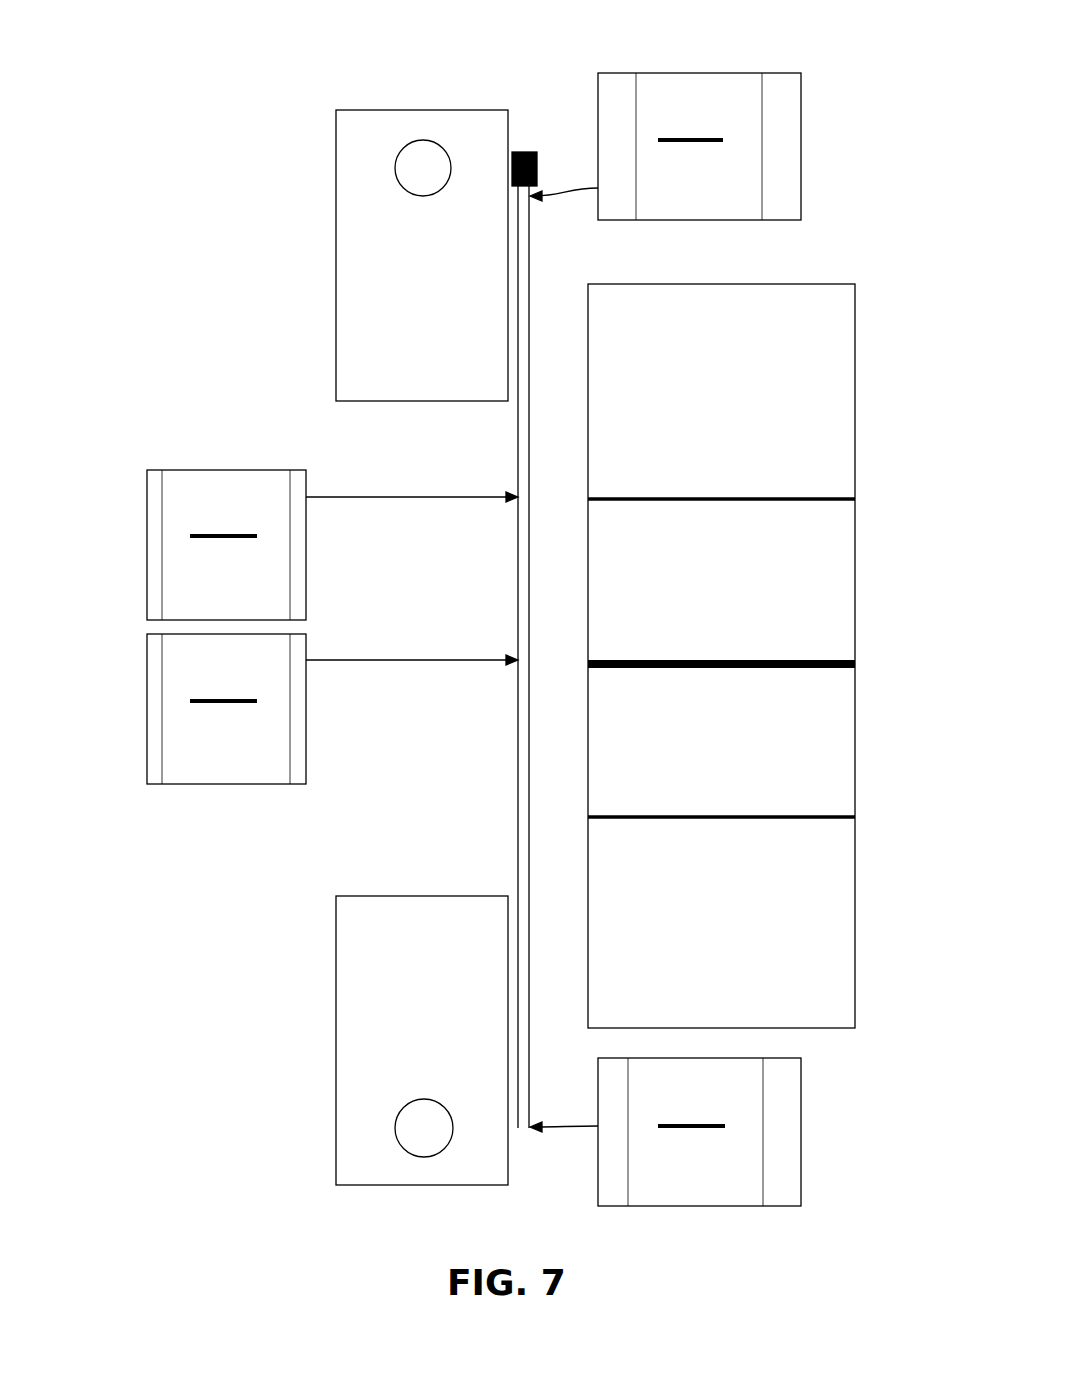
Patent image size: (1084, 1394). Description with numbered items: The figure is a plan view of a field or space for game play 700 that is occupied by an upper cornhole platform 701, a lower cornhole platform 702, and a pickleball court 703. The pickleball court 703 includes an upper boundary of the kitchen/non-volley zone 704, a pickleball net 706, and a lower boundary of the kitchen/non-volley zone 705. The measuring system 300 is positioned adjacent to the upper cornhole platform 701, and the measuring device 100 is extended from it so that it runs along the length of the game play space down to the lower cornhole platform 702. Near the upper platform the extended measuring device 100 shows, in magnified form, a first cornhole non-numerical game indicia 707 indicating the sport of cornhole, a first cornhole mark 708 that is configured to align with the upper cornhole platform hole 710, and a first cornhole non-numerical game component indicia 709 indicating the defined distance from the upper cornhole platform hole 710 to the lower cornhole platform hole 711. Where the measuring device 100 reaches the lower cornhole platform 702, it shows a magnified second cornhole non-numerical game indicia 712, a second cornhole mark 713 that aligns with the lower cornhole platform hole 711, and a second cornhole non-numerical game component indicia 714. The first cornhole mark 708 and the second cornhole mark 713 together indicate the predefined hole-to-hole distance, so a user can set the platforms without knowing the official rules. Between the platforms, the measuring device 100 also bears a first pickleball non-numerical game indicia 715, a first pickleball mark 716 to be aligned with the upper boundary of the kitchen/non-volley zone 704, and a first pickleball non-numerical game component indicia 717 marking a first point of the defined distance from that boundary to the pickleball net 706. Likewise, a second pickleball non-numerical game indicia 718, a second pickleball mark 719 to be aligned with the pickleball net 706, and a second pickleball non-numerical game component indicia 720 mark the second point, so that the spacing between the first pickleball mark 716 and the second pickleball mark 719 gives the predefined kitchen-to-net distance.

The field or space for game play 700 is at (115, 200).
The upper cornhole platform 701 is at (336, 157).
The lower cornhole platform 702 is at (336, 1123).
The pickleball court 703 is at (858, 284).
The upper boundary of the kitchen/non-volley zone 704 is at (825, 499).
The lower boundary of the kitchen/non-volley zone 705 is at (825, 819).
The pickleball net 706 is at (825, 661).
The first cornhole non-numerical game indicia 707 is at (698, 175).
The first cornhole mark 708 is at (723, 142).
The first cornhole non-numerical game component indicia 709 is at (723, 113).
The upper cornhole platform hole 710 is at (423, 140).
The lower cornhole platform hole 711 is at (424, 1157).
The second cornhole non-numerical game indicia 712 is at (698, 1168).
The second cornhole mark 713 is at (723, 1126).
The second cornhole non-numerical game component indicia 714 is at (723, 1102).
The first pickleball non-numerical game indicia 715 is at (205, 575).
The first pickleball mark 716 is at (190, 536).
The first pickleball non-numerical game component indicia 717 is at (205, 508).
The second pickleball non-numerical game indicia 718 is at (205, 739).
The second pickleball mark 719 is at (190, 701).
The second pickleball non-numerical game component indicia 720 is at (205, 673).
The measuring system 300 is at (522, 152).
The measuring device 100 is at (518, 442).